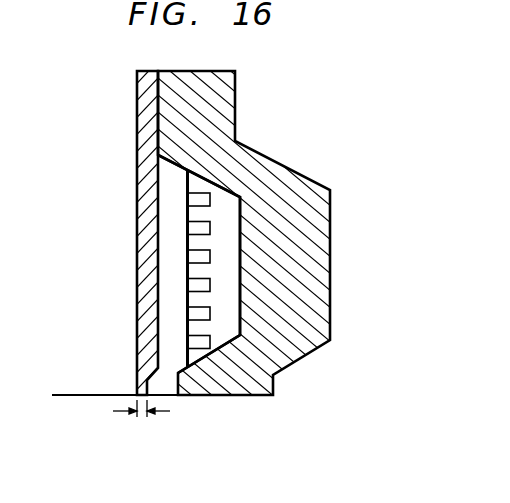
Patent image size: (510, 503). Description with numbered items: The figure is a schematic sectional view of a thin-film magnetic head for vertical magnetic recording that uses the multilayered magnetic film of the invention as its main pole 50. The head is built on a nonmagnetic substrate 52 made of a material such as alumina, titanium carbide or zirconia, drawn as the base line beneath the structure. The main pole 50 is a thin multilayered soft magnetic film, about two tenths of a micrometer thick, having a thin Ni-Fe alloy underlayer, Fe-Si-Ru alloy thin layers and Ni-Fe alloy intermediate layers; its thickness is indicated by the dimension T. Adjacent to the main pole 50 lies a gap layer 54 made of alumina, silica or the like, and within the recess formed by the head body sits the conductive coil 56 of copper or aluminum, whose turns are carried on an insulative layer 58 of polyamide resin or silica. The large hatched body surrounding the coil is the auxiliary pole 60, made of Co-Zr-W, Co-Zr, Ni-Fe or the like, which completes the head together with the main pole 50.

The main pole 50 is at (139, 260).
The nonmagnetic substrate 52 is at (79, 378).
The gap layer 54 is at (170, 247).
The conductive coil 56 is at (208, 200).
The insulative layer 58 is at (227, 265).
The auxiliary pole 60 is at (311, 275).
The wall thickness T is at (141, 420).